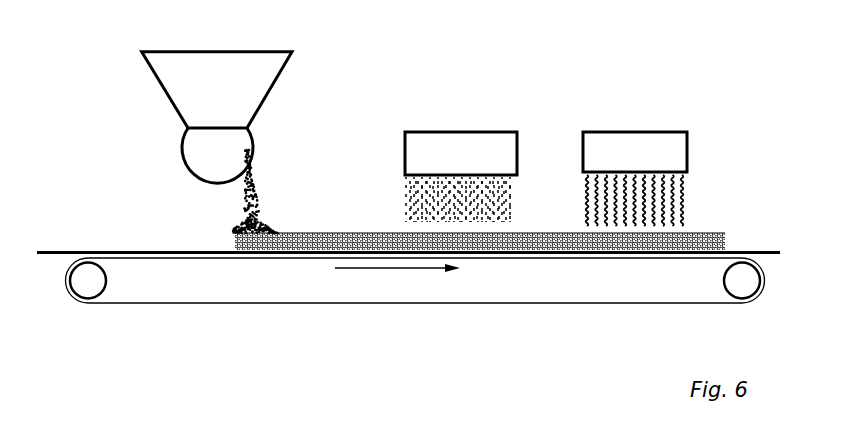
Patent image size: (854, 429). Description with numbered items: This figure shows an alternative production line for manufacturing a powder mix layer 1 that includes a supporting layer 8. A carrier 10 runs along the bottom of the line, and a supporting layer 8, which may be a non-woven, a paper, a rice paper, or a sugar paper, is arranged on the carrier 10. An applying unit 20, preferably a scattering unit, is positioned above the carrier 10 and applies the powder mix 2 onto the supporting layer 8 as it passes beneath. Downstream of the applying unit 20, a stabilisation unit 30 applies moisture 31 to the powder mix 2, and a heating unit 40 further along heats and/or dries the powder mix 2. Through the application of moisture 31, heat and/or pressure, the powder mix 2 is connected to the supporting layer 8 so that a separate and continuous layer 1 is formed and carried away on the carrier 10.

The layer 1 is at (714, 208).
The powder mix 2 is at (240, 216).
The supporting layer 8 is at (148, 251).
The carrier 10 is at (190, 304).
The applying unit 20 is at (284, 110).
The stabilisation unit 30 is at (478, 110).
The moisture 31 is at (425, 202).
The heating unit 40 is at (628, 110).